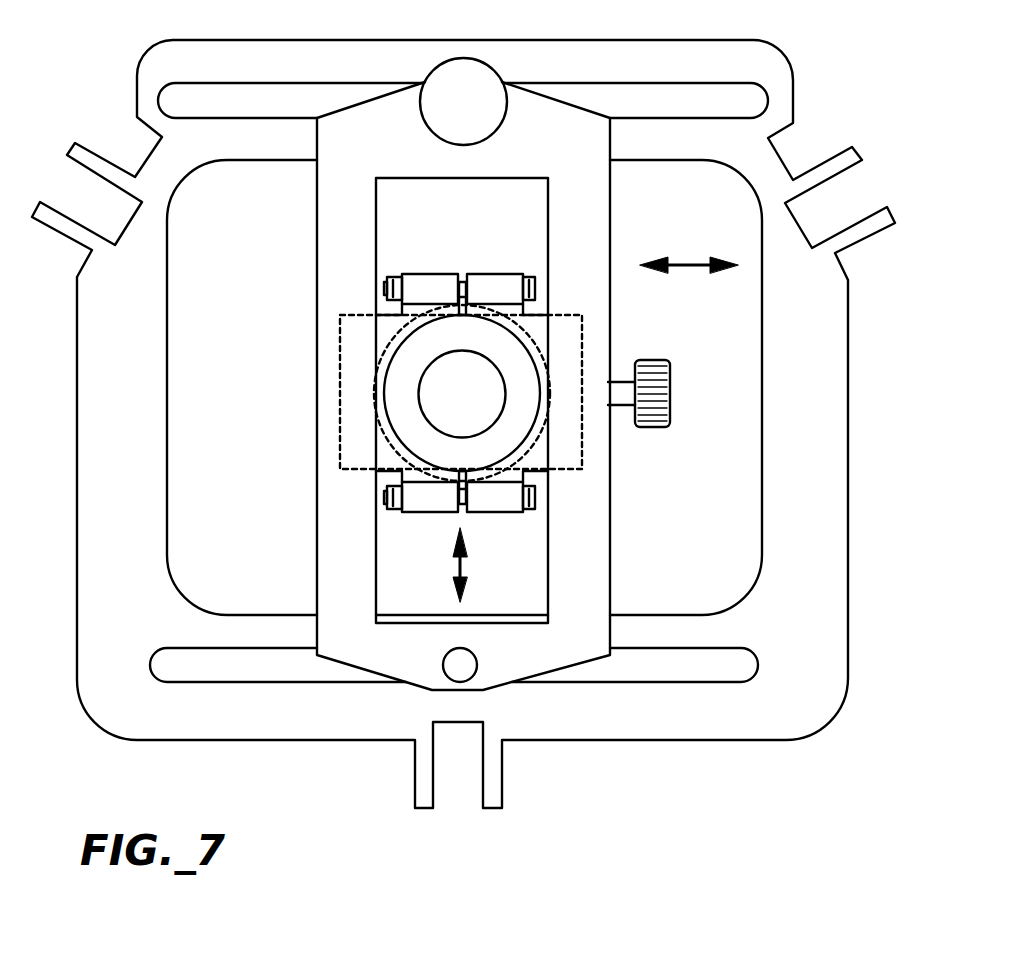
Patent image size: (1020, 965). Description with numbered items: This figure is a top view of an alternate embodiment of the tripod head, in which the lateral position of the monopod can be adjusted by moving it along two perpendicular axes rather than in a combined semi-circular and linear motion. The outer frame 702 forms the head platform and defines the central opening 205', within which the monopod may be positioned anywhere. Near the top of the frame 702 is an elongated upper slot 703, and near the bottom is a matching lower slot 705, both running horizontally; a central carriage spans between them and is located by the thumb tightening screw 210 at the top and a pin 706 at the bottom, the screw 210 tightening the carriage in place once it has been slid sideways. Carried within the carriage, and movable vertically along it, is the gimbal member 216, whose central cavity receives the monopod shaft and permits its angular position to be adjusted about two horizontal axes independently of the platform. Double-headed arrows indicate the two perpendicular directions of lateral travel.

The thumb tightening screw 210 is at (460, 92).
The upper guide slot 703 is at (677, 102).
The gimbal member 216 is at (400, 396).
The central opening 205' is at (536, 387).
The lower guide slot 705 is at (635, 673).
The frame 702 is at (762, 722).
The lower pin 706 is at (458, 677).